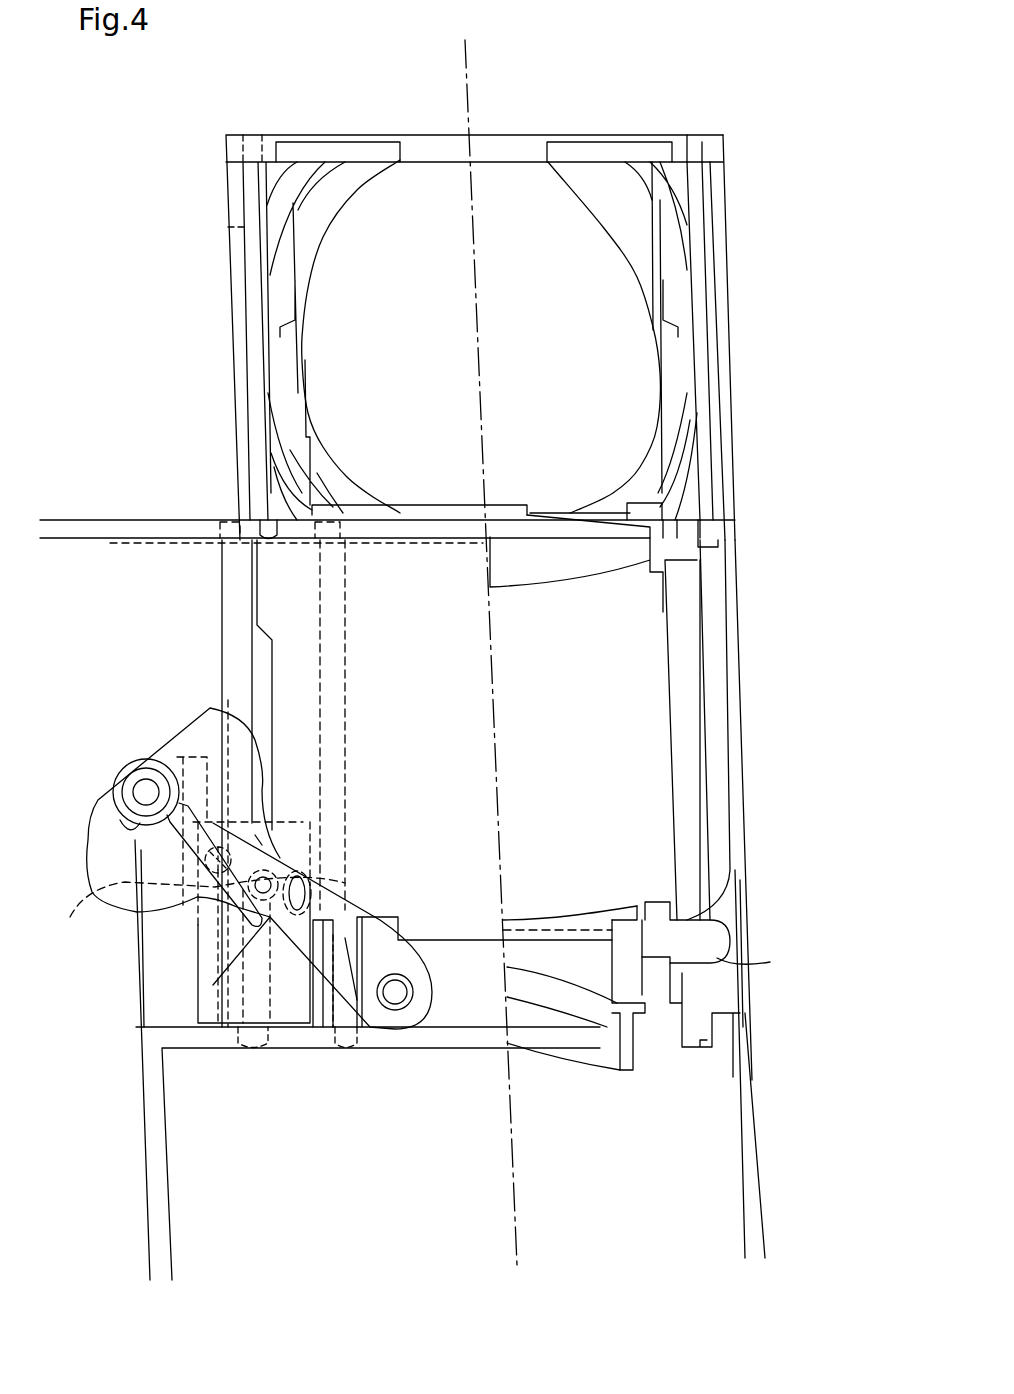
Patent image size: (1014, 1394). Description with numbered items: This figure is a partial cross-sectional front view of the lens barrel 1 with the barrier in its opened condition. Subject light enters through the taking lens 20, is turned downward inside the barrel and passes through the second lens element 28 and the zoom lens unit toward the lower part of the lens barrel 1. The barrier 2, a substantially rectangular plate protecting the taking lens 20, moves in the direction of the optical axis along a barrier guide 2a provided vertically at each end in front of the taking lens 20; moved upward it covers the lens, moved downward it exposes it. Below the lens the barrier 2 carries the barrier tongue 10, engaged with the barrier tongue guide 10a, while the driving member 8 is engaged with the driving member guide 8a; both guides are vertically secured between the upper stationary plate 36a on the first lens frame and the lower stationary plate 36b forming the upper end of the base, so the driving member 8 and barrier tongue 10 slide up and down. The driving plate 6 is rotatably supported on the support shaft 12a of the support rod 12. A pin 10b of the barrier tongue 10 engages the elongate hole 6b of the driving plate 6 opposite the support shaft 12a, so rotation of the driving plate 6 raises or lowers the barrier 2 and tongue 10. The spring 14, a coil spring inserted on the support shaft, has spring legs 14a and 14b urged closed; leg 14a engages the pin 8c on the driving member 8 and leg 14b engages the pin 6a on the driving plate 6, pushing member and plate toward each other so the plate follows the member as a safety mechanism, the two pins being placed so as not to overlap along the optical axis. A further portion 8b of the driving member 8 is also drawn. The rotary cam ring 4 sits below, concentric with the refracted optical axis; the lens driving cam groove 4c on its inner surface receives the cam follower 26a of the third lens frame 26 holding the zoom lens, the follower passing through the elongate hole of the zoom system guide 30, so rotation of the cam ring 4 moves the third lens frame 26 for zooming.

The lens barrel 1 is at (738, 128).
The barrier 2 is at (722, 825).
The barrier guide 2a is at (265, 435).
The rotary cam ring 4 is at (712, 665).
The lens driving cam groove 4c is at (770, 962).
The driving plate 6 is at (195, 745).
The pin 6a is at (310, 850).
The elongate hole 6b is at (397, 1010).
The driving member 8 is at (290, 1013).
The driving member guide 8a is at (232, 628).
The engaging portion of first barrier blade 8b is at (345, 883).
The pin 8c is at (82, 915).
The barrier tongue 10 is at (453, 1012).
The barrier tongue guide 10a is at (318, 580).
The pin 10b is at (453, 1012).
The support rod 12 is at (158, 962).
The support shaft 12a is at (140, 797).
The spring 14 is at (137, 830).
The spring leg 14a is at (257, 840).
The spring leg 14b is at (222, 1030).
The taking lens 20 is at (545, 235).
The third lens frame 26 is at (653, 993).
The cam follower 26a is at (713, 938).
The second lens element 28 is at (600, 558).
The zoom system guide 30 is at (690, 727).
The upper stationary plate 36a is at (162, 522).
The lower stationary plate 36b is at (162, 1033).